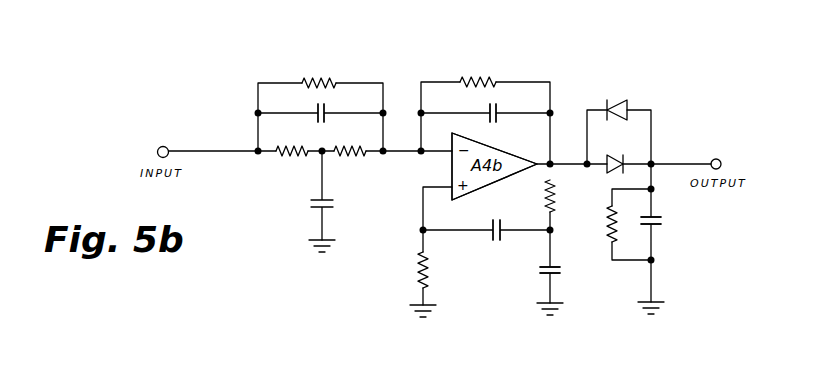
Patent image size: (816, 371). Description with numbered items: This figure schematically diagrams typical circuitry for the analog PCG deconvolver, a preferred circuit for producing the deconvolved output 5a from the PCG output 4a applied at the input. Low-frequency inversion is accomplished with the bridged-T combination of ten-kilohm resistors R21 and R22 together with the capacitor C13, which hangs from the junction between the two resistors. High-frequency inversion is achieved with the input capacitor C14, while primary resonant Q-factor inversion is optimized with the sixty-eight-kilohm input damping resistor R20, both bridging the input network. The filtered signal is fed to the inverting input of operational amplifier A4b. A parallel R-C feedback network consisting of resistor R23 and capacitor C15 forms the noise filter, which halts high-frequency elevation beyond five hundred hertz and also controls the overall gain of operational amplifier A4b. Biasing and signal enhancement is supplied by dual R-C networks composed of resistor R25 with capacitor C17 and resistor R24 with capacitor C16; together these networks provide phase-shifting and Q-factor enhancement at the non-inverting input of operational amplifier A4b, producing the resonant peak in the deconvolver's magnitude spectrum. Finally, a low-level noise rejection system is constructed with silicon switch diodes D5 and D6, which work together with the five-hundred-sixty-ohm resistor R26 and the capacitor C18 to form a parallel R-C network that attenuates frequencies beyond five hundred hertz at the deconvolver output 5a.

The PCG output 4a is at (159, 147).
The PCG deconvolver output 5a is at (714, 159).
The input damping resistor R20 is at (300, 82).
The resistor R21 is at (303, 158).
The resistor R22 is at (340, 158).
The resistor R23 is at (496, 80).
The resistor R24 is at (418, 262).
The resistor R25 is at (547, 195).
The resistor R26 is at (609, 232).
The capacitor C13 is at (310, 201).
The input capacitor C14 is at (325, 106).
The capacitor C15 is at (489, 106).
The capacitor C16 is at (498, 242).
The capacitor C17 is at (561, 271).
The capacitor C18 is at (662, 218).
The silicon switch diode D5 is at (621, 100).
The silicon switch diode D6 is at (615, 154).
The operational amplifier A4b is at (494, 166).